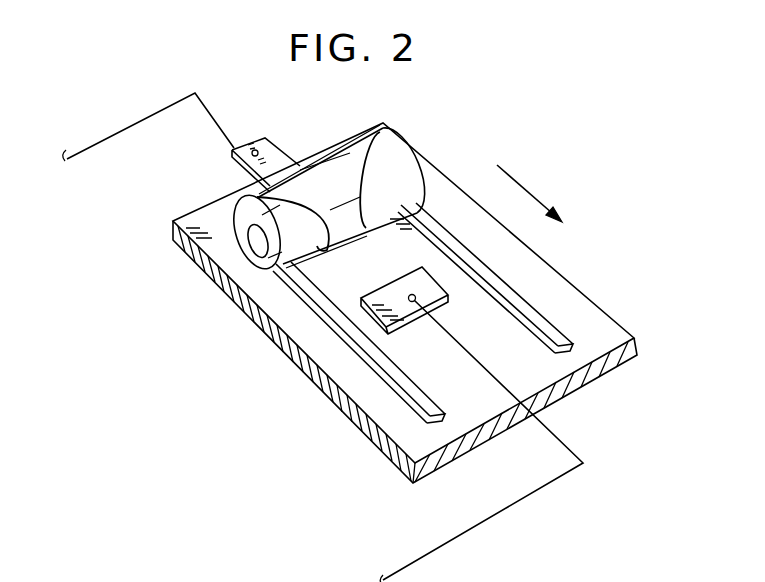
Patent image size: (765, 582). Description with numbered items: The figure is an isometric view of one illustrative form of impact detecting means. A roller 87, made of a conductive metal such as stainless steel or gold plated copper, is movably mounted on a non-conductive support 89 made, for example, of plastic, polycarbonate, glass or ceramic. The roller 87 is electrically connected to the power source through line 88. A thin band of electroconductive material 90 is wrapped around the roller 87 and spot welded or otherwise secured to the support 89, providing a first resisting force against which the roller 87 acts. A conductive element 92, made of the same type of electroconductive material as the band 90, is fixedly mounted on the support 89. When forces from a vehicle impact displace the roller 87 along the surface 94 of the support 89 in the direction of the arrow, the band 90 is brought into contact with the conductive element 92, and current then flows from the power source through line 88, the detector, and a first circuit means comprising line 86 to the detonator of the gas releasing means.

The line 86 is at (567, 447).
The roller 87 is at (405, 160).
The line 88 is at (222, 120).
The non-conductive support 89 is at (172, 231).
The band of electroconductive material 90 is at (363, 150).
The conductive element 92 is at (385, 297).
The surface 94 is at (257, 292).